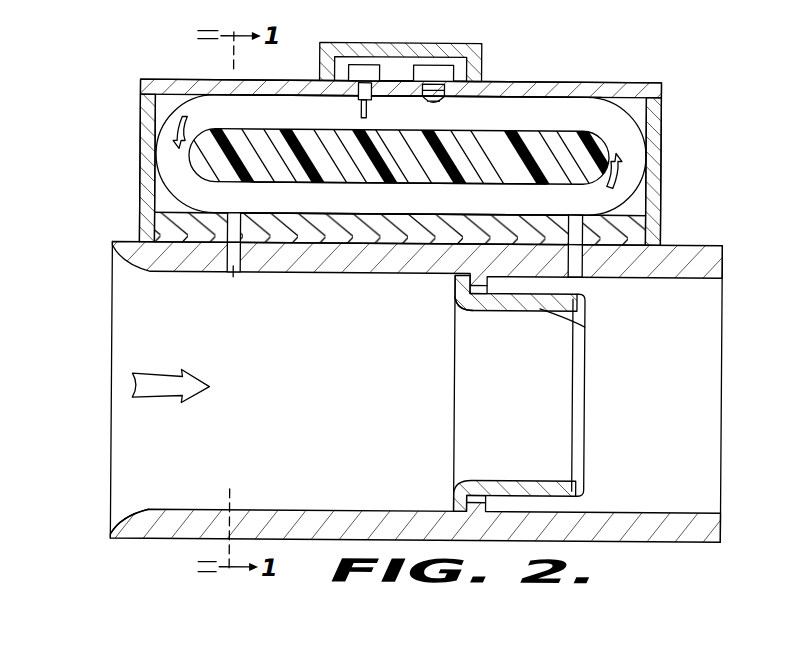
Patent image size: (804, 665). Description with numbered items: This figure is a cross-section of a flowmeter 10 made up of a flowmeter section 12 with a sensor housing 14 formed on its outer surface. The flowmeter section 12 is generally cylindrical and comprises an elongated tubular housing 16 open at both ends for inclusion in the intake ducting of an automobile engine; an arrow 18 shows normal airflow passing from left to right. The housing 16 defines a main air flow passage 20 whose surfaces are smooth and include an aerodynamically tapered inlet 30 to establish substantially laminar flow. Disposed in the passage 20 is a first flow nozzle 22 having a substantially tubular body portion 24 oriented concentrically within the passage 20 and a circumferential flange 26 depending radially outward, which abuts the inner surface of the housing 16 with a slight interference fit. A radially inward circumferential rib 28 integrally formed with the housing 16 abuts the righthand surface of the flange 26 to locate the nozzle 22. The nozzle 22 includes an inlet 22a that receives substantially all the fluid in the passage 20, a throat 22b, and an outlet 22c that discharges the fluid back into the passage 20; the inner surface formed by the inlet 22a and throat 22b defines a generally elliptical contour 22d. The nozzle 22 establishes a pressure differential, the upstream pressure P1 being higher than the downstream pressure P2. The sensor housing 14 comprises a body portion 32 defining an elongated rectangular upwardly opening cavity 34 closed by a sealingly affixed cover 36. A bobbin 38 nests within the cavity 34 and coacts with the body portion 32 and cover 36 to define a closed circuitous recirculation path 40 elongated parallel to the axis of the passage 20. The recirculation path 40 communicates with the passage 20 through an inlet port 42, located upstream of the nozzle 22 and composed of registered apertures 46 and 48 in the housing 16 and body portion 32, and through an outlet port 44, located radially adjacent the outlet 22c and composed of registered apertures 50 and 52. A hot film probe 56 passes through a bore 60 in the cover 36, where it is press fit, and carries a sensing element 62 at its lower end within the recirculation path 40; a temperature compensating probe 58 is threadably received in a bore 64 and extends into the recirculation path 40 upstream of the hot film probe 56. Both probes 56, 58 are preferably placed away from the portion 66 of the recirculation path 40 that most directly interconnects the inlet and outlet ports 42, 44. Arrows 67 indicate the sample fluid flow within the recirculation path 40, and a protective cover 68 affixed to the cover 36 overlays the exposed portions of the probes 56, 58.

The flowmeter 10 is at (674, 78).
The flowmeter section 12 is at (155, 544).
The sensor housing 14 is at (668, 146).
The tubular housing 16 is at (652, 528).
The arrow 18 is at (165, 395).
The main air flow passage 20 is at (108, 298).
The first flow nozzle 22 is at (536, 388).
The inlet 22a is at (455, 485).
The throat 22b is at (486, 480).
The outlet 22c is at (590, 485).
The contour 22d is at (462, 308).
The tubular body portion 24 is at (585, 326).
The circumferential flange 26 is at (454, 282).
The circumferential rib 28 is at (508, 494).
The aerodynamically tapered inlet 30 is at (130, 511).
The body portion 32 is at (148, 184).
The cavity 34 is at (154, 103).
The cover 36 is at (200, 95).
The bobbin 38 is at (545, 140).
The recirculation path 40 is at (248, 116).
The inlet port 42 is at (230, 285).
The outlet port 44 is at (590, 283).
The aperture 46 is at (236, 278).
The aperture 48 is at (246, 214).
The aperture 50 is at (566, 264).
The aperture 52 is at (572, 214).
The hot film probe 56 is at (360, 68).
The temperature compensating probe 58 is at (432, 68).
The bore 60 is at (355, 102).
The sensing element 62 is at (367, 113).
The bore 64 is at (436, 102).
The portion of recirculation path 66 is at (398, 198).
The arrows 67 is at (172, 134).
The protective cover 68 is at (482, 64).
The upstream pressure P1 is at (365, 400).
The downstream pressure P2 is at (630, 395).